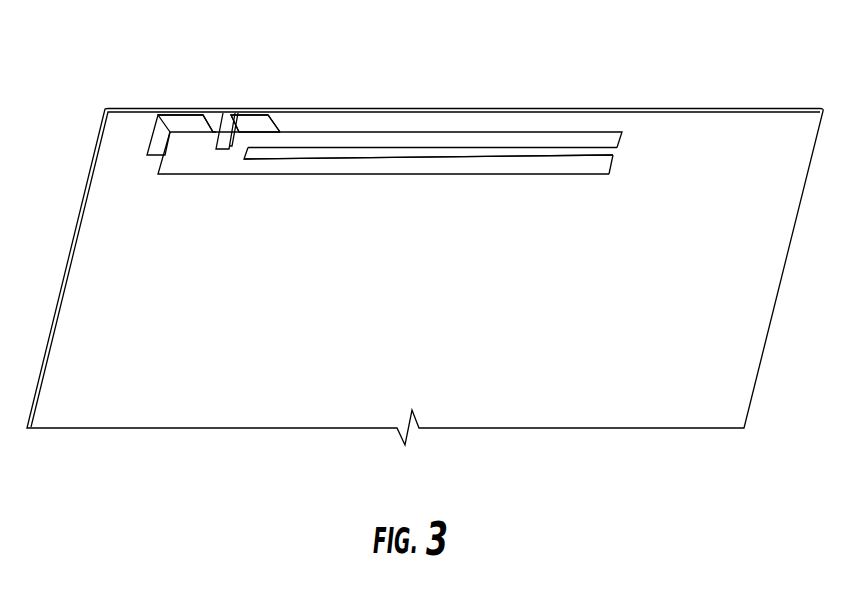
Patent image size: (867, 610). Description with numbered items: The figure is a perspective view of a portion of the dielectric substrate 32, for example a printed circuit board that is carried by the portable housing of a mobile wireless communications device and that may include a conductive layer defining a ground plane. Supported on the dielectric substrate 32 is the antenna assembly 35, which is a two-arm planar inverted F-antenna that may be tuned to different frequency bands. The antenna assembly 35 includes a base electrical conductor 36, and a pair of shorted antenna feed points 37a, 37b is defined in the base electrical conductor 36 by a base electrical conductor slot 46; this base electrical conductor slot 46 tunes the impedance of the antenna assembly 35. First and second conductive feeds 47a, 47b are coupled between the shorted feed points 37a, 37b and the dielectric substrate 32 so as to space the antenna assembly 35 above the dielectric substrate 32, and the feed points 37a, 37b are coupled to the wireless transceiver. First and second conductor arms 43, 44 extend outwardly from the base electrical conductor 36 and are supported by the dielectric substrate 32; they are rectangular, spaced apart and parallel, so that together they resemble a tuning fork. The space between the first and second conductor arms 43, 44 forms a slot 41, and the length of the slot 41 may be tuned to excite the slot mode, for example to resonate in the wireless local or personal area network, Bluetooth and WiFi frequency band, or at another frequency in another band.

The dielectric substrate 32 is at (117, 346).
The antenna assembly 35 is at (201, 103).
The base electrical conductor 36 is at (192, 162).
The shorted antenna feed point 37a is at (182, 147).
The shorted antenna feed point 37b is at (267, 140).
The slot 41 is at (605, 154).
The first conductor arm 43 is at (541, 165).
The second conductor arm 44 is at (493, 138).
The base electrical conductor slot 46 is at (220, 143).
The first conductive feed 47a is at (180, 122).
The second conductive feed 47b is at (247, 125).